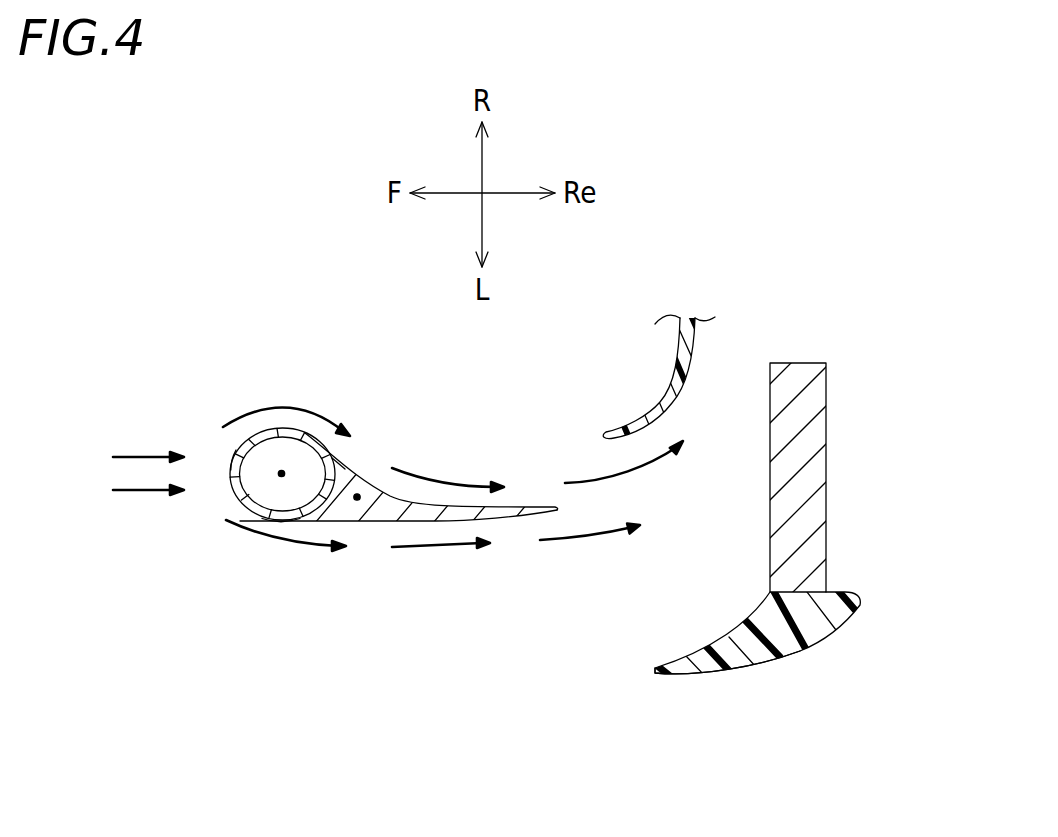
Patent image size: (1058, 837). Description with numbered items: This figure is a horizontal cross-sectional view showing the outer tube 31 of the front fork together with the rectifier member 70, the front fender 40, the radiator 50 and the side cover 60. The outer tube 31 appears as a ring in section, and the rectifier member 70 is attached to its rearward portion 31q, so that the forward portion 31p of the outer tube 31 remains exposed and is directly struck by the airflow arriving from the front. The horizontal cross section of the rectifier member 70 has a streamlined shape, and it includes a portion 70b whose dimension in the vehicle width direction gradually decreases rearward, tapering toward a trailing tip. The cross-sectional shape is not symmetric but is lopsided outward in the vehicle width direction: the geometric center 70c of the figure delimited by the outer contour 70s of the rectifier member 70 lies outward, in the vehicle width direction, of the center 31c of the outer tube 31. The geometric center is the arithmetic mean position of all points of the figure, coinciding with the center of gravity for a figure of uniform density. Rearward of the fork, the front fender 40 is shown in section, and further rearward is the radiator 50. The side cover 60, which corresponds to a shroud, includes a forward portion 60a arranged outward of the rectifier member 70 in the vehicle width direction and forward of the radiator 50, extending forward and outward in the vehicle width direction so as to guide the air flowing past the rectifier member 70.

The outer tube 31 is at (283, 458).
The forward portion of the outer tube 31p is at (230, 463).
The rearward portion of the outer tube 31q is at (352, 471).
The center of the outer tube 31c is at (240, 521).
The rectifier member 70 is at (403, 512).
The portion of the rectifier member 70b is at (390, 495).
The geometric center 70c is at (357, 500).
The outer contour 70s is at (317, 521).
The front fender 40 is at (667, 387).
The radiator 50 is at (826, 402).
The side cover 60 is at (753, 686).
The forward portion of the side cover 60a is at (687, 674).